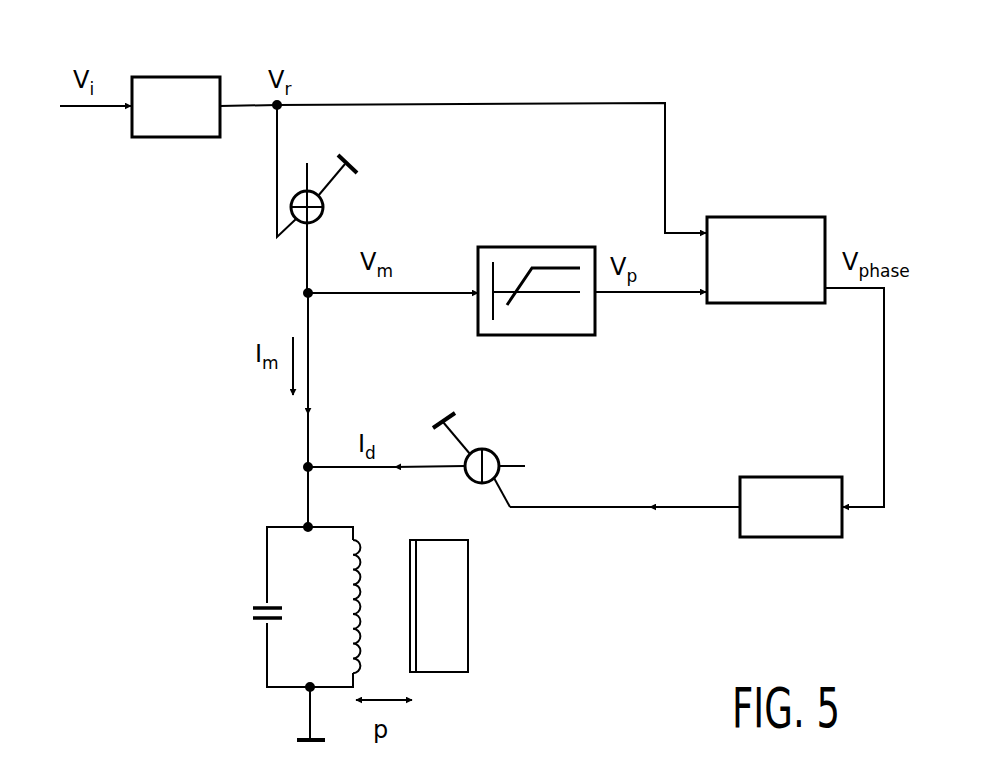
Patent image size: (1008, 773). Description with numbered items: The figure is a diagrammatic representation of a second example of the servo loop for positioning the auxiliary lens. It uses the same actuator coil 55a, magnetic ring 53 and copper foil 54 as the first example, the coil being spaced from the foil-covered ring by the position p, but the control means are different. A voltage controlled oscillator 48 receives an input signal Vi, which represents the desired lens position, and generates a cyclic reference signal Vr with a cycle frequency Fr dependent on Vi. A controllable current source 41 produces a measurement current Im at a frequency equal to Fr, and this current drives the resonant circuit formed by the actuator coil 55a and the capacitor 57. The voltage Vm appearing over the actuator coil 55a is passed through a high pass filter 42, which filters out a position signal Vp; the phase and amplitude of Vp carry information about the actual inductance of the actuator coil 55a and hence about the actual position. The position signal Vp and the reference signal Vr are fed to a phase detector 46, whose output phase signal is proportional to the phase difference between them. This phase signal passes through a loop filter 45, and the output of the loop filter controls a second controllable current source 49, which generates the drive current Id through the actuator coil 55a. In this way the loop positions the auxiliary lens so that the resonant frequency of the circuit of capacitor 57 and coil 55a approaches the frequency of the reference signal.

The voltage controlled oscillator 48 is at (173, 75).
The controllable current source 41 is at (323, 213).
The high pass filter 42 is at (532, 247).
The phase detector 46 is at (758, 217).
The loop filter 45 is at (785, 477).
The controllable current source 49 is at (497, 452).
The capacitor 57 is at (252, 613).
The actuator coil 55a is at (363, 543).
The magnetic ring 53 is at (468, 588).
The copper foil 54 is at (410, 645).